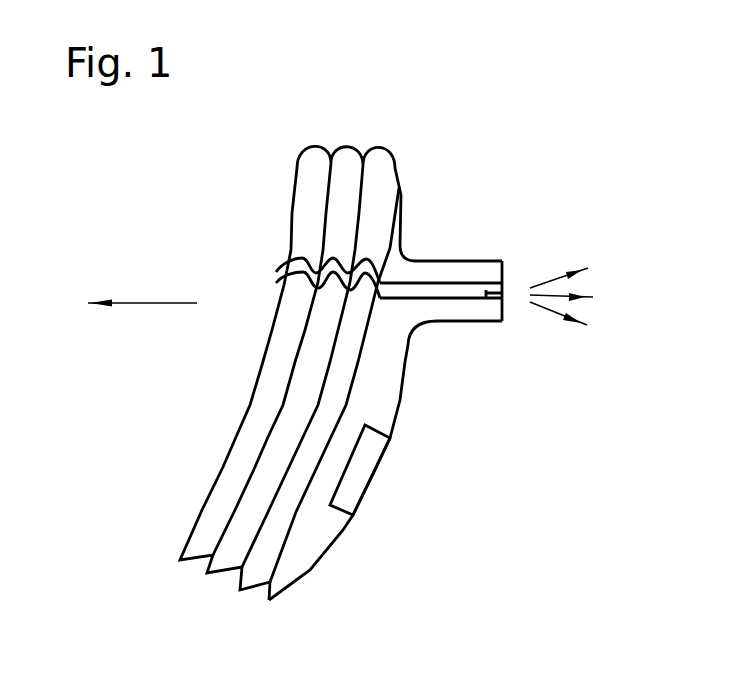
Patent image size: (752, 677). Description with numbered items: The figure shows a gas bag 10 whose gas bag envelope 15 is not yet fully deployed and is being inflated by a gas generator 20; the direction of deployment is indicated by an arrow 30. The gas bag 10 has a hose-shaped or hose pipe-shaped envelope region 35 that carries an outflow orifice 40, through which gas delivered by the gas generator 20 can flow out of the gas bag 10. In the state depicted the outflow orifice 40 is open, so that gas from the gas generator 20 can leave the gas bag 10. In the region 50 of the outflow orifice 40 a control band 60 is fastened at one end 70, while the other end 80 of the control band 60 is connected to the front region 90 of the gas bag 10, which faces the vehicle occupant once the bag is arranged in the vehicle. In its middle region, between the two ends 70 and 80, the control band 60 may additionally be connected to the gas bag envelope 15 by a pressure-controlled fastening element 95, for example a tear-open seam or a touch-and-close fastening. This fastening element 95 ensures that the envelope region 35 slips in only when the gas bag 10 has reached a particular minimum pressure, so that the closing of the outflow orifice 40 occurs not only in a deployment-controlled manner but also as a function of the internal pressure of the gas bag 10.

The gas bag 10 is at (395, 172).
The gas bag envelope 15 is at (331, 160).
The gas generator 20 is at (363, 480).
The arrow 30 is at (152, 303).
The envelope region 35 is at (448, 321).
The outflow orifice 40 is at (512, 285).
The region of the outflow orifice 50 is at (482, 298).
The control band 60 is at (422, 283).
The end 70 is at (506, 278).
The other end 80 is at (287, 272).
The front region 90 is at (225, 465).
The pressure-controlled fastening element 95 is at (467, 292).